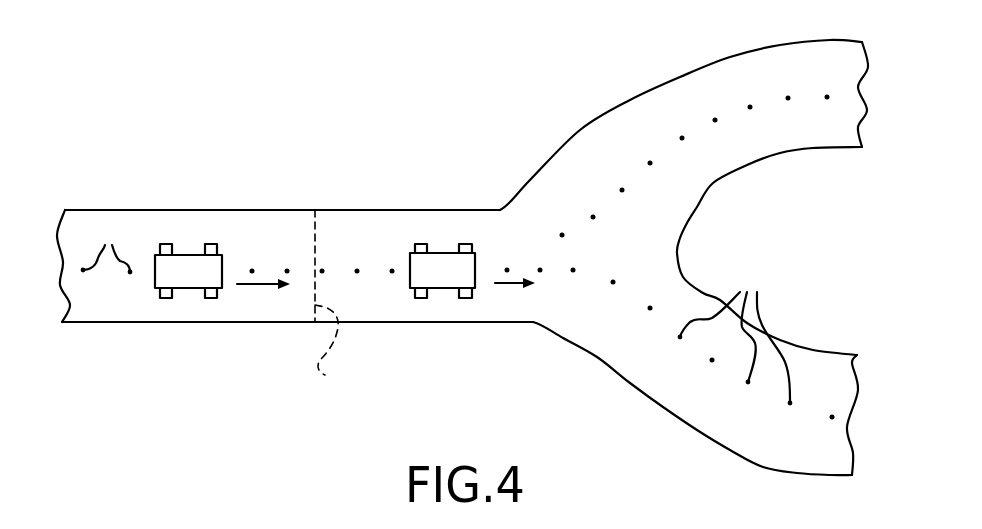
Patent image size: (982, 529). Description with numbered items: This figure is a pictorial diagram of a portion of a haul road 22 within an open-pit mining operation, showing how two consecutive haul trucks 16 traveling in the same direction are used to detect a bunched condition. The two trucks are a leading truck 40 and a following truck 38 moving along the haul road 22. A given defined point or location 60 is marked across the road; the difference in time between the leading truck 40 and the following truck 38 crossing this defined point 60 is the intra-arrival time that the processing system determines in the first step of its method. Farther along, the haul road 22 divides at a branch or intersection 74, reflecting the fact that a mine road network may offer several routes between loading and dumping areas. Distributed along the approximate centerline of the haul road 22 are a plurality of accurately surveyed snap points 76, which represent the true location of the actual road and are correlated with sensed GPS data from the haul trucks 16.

The haul trucks 16 is at (301, 272).
The haul road 22 is at (165, 210).
The following truck 38 is at (210, 244).
The leading truck 40 is at (420, 244).
The defined point 60 is at (338, 300).
The branches or intersections 74 is at (699, 228).
The snap points 76 is at (437, 311).